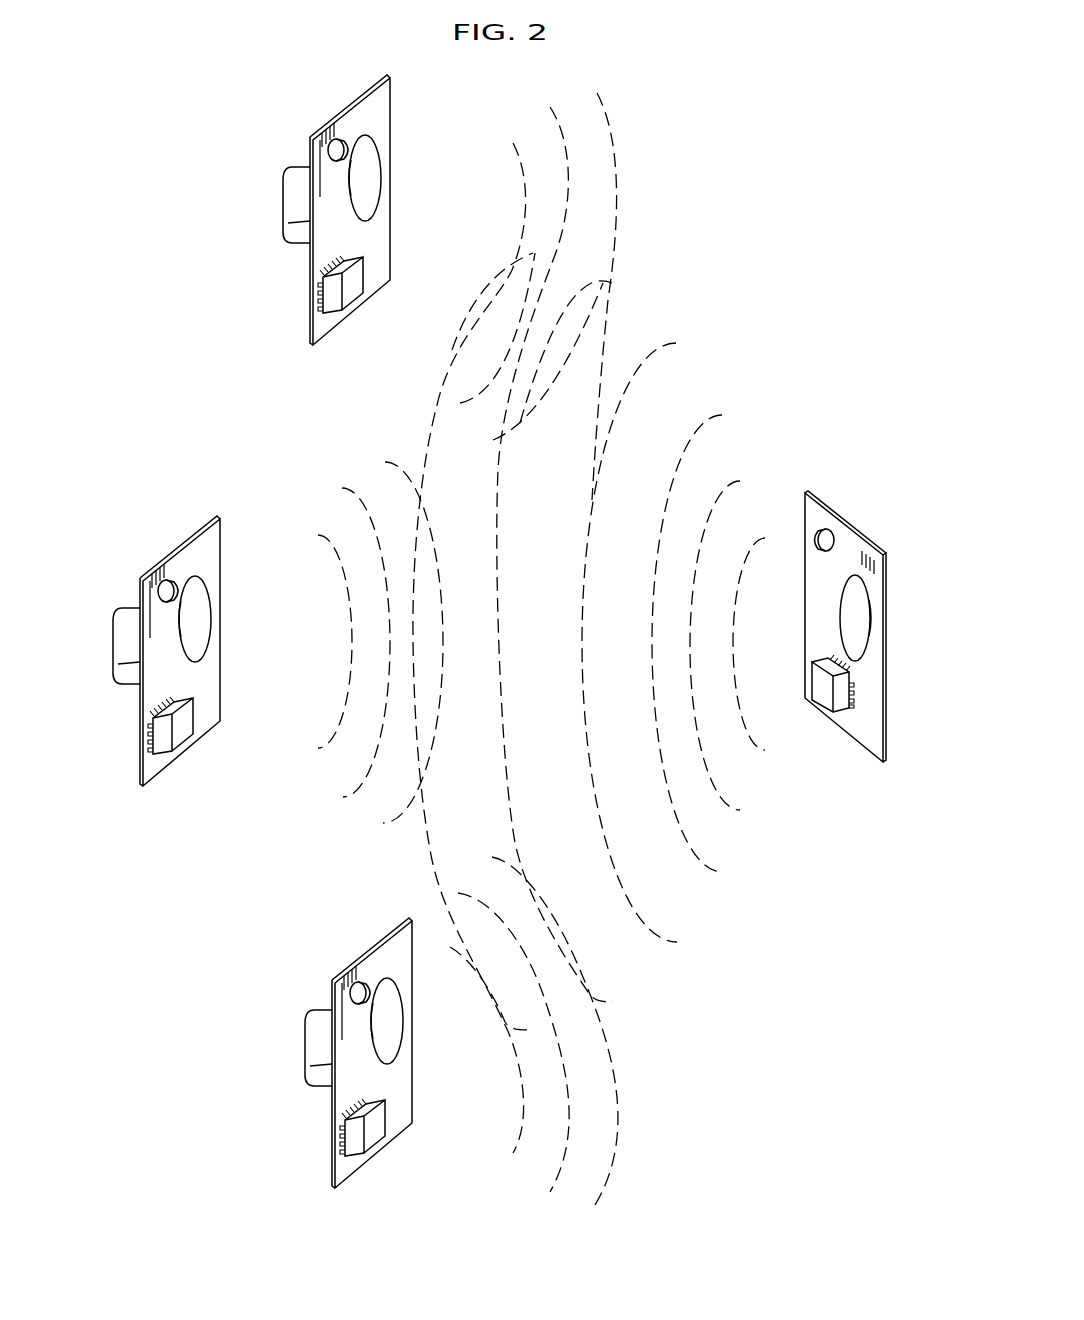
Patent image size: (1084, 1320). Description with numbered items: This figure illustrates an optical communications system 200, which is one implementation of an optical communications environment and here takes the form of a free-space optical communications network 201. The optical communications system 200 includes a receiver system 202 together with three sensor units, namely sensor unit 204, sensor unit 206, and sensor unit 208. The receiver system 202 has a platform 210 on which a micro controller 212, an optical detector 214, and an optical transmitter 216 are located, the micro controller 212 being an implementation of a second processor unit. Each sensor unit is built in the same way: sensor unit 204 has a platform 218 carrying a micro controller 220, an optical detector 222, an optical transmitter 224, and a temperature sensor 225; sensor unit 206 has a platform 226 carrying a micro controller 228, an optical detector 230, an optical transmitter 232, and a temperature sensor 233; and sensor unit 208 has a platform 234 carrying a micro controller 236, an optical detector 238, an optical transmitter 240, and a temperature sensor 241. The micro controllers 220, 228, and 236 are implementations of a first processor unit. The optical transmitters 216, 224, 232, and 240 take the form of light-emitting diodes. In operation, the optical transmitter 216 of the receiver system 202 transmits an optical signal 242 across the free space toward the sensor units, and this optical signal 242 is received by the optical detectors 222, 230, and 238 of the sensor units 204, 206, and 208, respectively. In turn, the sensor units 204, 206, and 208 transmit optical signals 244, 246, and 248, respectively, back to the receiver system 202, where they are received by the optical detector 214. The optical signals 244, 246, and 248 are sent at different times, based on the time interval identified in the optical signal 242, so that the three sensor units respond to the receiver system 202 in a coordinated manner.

The optical communications system 200 is at (784, 130).
The free-space optical communications network 201 is at (763, 349).
The receiver system 202 is at (823, 614).
The sensor unit 204 is at (347, 203).
The sensor unit 206 is at (211, 644).
The sensor unit 208 is at (343, 1046).
The platform 210 is at (865, 732).
The micro controller 212 is at (820, 695).
The optical detector 214 is at (850, 622).
The optical transmitter 216 is at (817, 537).
The platform 218 is at (383, 270).
The micro controller 220 is at (350, 293).
The optical detector 222 is at (370, 177).
The optical transmitter 224 is at (338, 150).
The temperature sensor 225 is at (283, 208).
The platform 226 is at (211, 651).
The micro controller 228 is at (198, 739).
The optical detector 230 is at (231, 619).
The optical transmitter 232 is at (156, 552).
The temperature sensor 233 is at (128, 610).
The platform 234 is at (403, 1053).
The micro controller 236 is at (389, 1140).
The optical detector 238 is at (422, 1021).
The optical transmitter 240 is at (349, 954).
The temperature sensor 241 is at (285, 1048).
The optical signal 242 is at (426, 406).
The optical signal 244 is at (633, 155).
The optical signal 246 is at (444, 748).
The optical signal 248 is at (631, 1115).